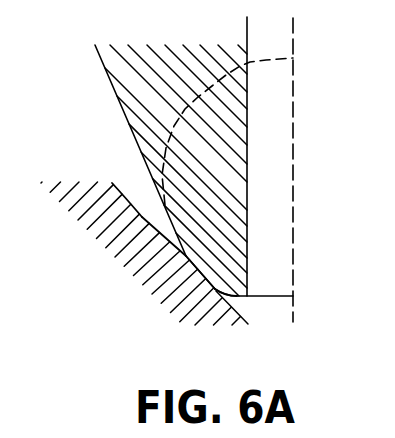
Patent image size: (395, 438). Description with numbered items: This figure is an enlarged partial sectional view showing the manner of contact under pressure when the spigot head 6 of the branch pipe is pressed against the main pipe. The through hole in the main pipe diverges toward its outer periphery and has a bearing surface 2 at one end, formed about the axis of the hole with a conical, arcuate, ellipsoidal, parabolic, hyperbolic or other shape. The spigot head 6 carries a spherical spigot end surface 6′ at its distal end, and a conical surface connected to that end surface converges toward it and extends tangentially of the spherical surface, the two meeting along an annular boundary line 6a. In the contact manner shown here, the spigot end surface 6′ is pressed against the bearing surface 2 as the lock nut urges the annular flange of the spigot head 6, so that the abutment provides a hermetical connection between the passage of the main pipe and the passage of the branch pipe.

The bearing surface 2 is at (112, 185).
The annular boundary line 6a is at (167, 212).
The spigot head 6 is at (184, 256).
The spigot end surface 6′ is at (214, 287).